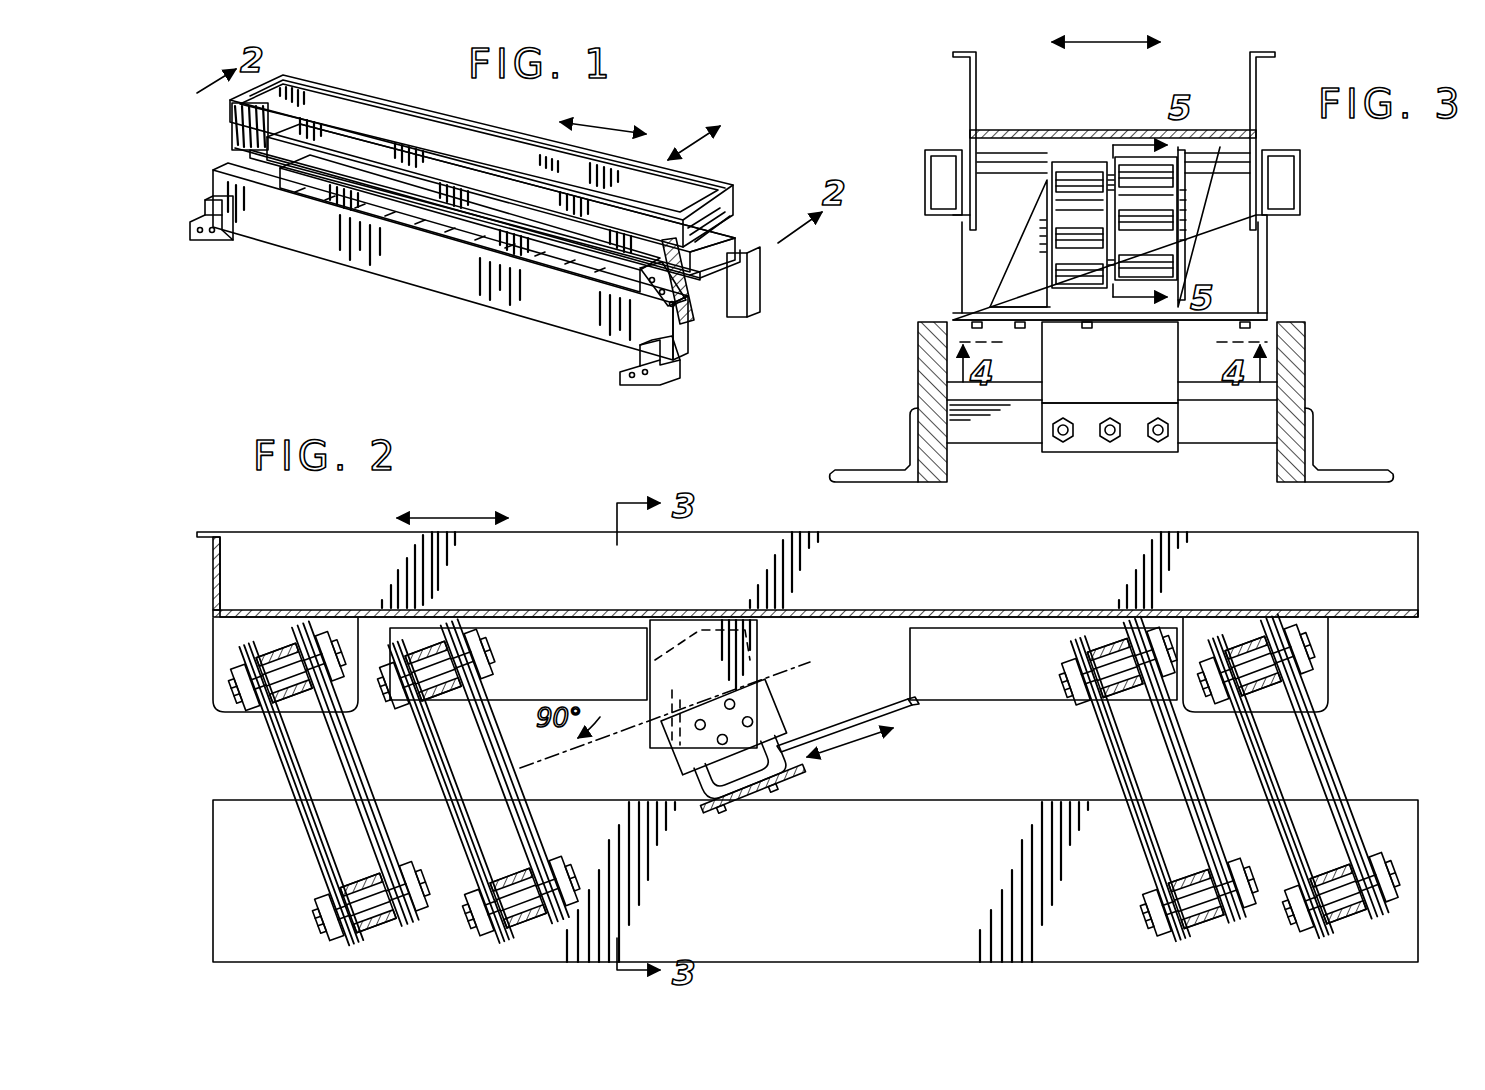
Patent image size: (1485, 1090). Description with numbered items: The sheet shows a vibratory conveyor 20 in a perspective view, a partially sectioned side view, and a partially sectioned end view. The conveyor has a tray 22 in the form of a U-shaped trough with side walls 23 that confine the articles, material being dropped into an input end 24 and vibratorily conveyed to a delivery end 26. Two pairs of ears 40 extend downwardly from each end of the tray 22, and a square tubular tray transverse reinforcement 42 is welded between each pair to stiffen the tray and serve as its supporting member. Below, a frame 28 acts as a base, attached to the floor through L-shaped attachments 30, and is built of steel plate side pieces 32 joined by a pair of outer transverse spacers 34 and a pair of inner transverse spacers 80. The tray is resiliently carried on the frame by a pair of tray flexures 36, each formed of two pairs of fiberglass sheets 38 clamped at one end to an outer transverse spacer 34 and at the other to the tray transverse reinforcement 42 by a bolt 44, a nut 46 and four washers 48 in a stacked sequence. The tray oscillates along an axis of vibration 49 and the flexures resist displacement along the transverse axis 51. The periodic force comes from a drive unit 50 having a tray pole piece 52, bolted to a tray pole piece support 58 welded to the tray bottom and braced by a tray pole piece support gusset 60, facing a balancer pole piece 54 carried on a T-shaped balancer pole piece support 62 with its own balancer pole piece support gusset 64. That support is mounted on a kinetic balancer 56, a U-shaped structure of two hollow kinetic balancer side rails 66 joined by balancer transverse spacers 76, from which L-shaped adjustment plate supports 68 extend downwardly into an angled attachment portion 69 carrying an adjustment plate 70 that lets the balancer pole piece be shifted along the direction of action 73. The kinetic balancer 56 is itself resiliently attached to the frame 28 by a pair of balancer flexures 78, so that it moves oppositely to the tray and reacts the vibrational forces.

In FIG. 1, the vibratory conveyor 20 is at (447, 300).
In FIG. 1, the tray 22 is at (452, 120).
In FIG. 2, the tray 22 is at (952, 532).
In FIG. 3, the tray 22 is at (1112, 128).
In FIG. 1, the side walls 23 is at (472, 132).
In FIG. 3, the side walls 23 is at (976, 85).
In FIG. 1, the input end 24 is at (286, 75).
In FIG. 1, the delivery end 26 is at (738, 210).
In FIG. 1, the frame 28 is at (685, 350).
In FIG. 1, the L-shaped attachments 30 is at (658, 380).
In FIG. 3, the L-shaped attachments 30 is at (838, 472).
In FIG. 1, the side pieces 32 is at (360, 288).
In FIG. 2, the side pieces 32 is at (1420, 845).
In FIG. 3, the side pieces 32 is at (940, 478).
In FIG. 1, the outer transverse spacers 34 is at (692, 320).
In FIG. 2, the outer transverse spacers 34 is at (390, 910).
In FIG. 3, the outer transverse spacers 34 is at (1000, 440).
In FIG. 1, the tray flexures 36 is at (745, 256).
In FIG. 2, the tray flexures 36 is at (1312, 755).
In FIG. 2, the fiberglass sheets 38 is at (338, 935).
In FIG. 1, the ears 40 is at (228, 128).
In FIG. 2, the ears 40 is at (213, 670).
In FIG. 2, the tray transverse reinforcement 42 is at (285, 660).
In FIG. 2, the bolt 44 is at (1395, 878).
In FIG. 2, the nut 46 is at (1290, 928).
In FIG. 2, the washers 48 is at (1322, 928).
In FIG. 1, the axis of vibration 49 is at (604, 126).
In FIG. 2, the axis of vibration 49 is at (456, 516).
In FIG. 2, the drive unit 50 is at (772, 760).
In FIG. 1, the transverse axis 51 is at (694, 142).
In FIG. 3, the transverse axis 51 is at (1110, 42).
In FIG. 3, the tray pole piece 52 is at (1150, 158).
In FIG. 3, the balancer pole piece 54 is at (1068, 158).
In FIG. 2, the kinetic balancer 56 is at (996, 700).
In FIG. 3, the kinetic balancer 56 is at (1300, 215).
In FIG. 2, the tray pole piece support 58 is at (760, 642).
In FIG. 3, the tray pole piece support 58 is at (1188, 258).
In FIG. 3, the tray pole piece support gusset 60 is at (1195, 230).
In FIG. 3, the balancer pole piece support 62 is at (1010, 300).
In FIG. 3, the balancer pole piece support gusset 64 is at (1018, 248).
In FIG. 1, the kinetic balancer side rails 66 is at (567, 280).
In FIG. 3, the kinetic balancer side rails 66 is at (925, 165).
In FIG. 2, the adjustment plate support 68 is at (912, 707).
In FIG. 3, the adjustment plate support 68 is at (1268, 290).
In FIG. 2, the attachment portion 69 is at (676, 773).
In FIG. 2, the adjustment plate 70 is at (735, 780).
In FIG. 3, the adjustment plate 70 is at (1108, 322).
In FIG. 2, the direction of action 73 is at (850, 747).
In FIG. 2, the balancer transverse spacers 76 is at (455, 705).
In FIG. 2, the balancer flexures 78 is at (415, 748).
In FIG. 2, the inner transverse spacers 80 is at (510, 925).